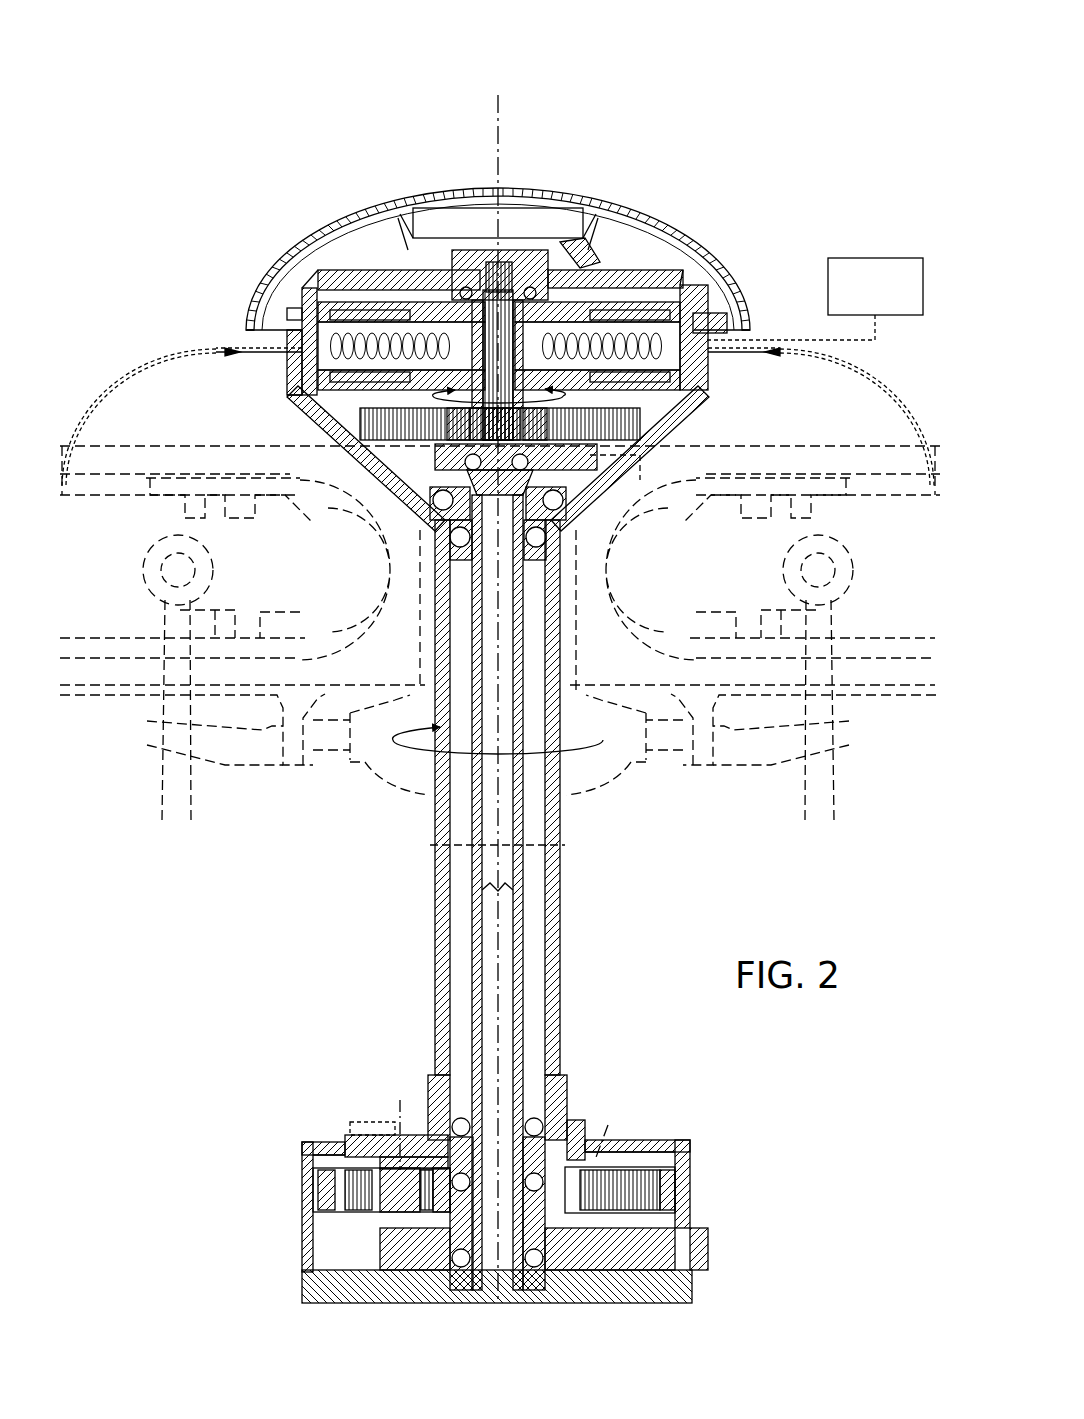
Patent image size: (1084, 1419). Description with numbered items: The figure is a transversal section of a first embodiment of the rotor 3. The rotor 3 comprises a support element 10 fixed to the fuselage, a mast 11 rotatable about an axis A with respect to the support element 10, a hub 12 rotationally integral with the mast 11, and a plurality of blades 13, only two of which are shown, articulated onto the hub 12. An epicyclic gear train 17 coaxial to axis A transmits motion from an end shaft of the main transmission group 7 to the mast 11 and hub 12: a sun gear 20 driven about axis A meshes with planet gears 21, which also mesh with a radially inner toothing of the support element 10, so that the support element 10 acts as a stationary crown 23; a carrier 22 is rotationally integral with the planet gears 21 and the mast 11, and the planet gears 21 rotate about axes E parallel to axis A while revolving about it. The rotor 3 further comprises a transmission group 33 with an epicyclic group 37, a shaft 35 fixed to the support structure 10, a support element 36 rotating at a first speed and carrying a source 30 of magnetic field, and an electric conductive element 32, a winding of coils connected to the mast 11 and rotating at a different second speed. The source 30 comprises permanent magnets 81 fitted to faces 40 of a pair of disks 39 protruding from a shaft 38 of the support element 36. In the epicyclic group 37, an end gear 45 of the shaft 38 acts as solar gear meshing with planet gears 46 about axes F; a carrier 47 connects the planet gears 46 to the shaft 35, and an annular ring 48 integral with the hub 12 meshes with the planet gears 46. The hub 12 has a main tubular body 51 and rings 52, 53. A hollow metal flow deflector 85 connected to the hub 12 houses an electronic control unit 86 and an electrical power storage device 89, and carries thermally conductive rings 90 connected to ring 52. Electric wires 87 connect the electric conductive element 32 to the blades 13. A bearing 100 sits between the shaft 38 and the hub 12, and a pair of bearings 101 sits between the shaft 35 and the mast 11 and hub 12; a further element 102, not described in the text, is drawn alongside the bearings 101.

The rotor 3 is at (666, 130).
The main transmission group 7 is at (712, 1205).
The support element 10 is at (585, 1292).
The mast 11 is at (558, 906).
The hub 12 is at (705, 440).
The blades 13 is at (88, 738).
The epicyclic gear train 17 is at (690, 1147).
The sun gear 20 is at (445, 1212).
The planet gears 21 is at (348, 1185).
The carrier 22 is at (350, 1140).
The stationary crown 23 is at (690, 1185).
The source of magnetic field 30 is at (618, 290).
The electric conductive element 32 is at (388, 328).
The transmission group 33 is at (418, 535).
The shaft 35 is at (522, 878).
The support element 36 is at (600, 245).
The epicyclic group 37 is at (615, 472).
The shaft 38 is at (540, 290).
The disks 39 is at (414, 245).
The faces 40 is at (700, 330).
The end gear 45 is at (496, 470).
The planet gears 46 is at (372, 448).
The carrier 47 is at (438, 525).
The annular ring 48 is at (378, 392).
The main tubular body 51 is at (305, 385).
The ring 52 is at (322, 275).
The ring 53 is at (428, 412).
The permanent magnets 81 is at (366, 315).
The flow deflector 85 is at (592, 188).
The electronic control unit 86 is at (462, 215).
The electric wires 87 is at (190, 362).
The electrical power storage device 89 is at (886, 270).
The thermally conductive rings 90 is at (305, 268).
The bearing 100 is at (497, 275).
The bearings 101 is at (562, 500).
The bearing 102 is at (545, 540).
The axis A is at (504, 150).
The axes E is at (504, 1121).
The axes F is at (559, 515).